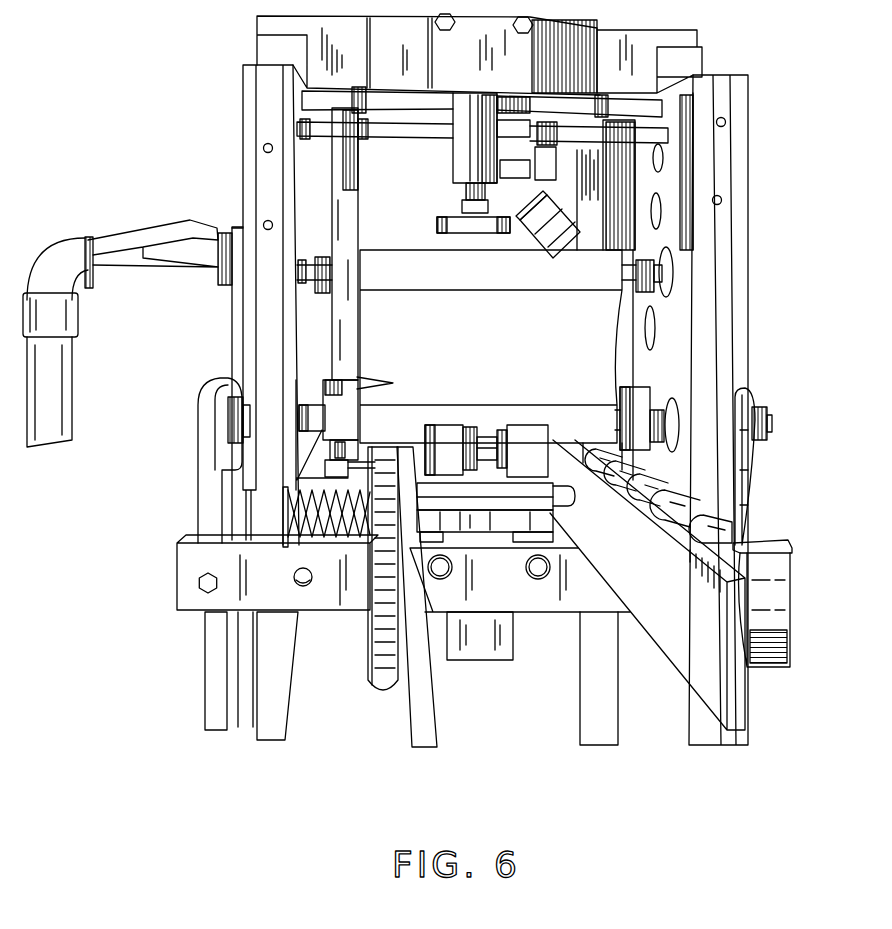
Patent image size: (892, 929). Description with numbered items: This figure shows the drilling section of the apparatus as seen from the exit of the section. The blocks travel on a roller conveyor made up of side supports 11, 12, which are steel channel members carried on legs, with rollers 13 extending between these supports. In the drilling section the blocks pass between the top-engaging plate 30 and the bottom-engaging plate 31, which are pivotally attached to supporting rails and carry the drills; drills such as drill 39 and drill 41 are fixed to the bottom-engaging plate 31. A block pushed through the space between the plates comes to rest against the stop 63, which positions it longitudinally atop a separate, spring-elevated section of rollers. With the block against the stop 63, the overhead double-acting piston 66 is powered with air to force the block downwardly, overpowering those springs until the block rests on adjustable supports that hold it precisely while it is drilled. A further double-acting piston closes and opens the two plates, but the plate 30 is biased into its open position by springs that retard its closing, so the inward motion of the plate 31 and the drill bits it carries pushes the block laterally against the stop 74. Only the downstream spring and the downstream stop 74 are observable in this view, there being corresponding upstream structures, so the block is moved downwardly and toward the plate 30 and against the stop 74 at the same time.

The side support 11 is at (423, 695).
The side support 12 is at (565, 460).
The rollers 13 is at (377, 620).
The top-engaging plate 30 is at (267, 172).
The bottom-engaging plate 31 is at (722, 160).
The drill 39 is at (650, 280).
The drill 41 is at (668, 400).
The stop 63 is at (447, 437).
The overhead double-acting piston 66 is at (460, 170).
The stop 74 is at (343, 397).